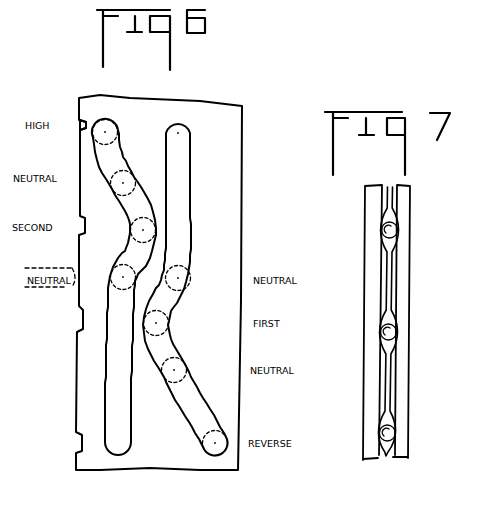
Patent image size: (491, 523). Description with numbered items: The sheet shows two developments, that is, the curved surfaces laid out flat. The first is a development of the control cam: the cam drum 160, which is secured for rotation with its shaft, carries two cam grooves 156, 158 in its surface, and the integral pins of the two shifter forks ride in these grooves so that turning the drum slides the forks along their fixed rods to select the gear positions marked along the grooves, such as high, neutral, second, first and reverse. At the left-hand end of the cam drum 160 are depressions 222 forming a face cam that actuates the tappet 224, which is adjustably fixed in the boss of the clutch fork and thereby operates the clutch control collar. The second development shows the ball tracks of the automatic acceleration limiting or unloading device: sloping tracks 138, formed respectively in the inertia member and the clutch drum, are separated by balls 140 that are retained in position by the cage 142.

In FIG. 6, the cam drum 160 is at (233, 182).
In FIG. 6, the cam groove 156 is at (125, 419).
In FIG. 6, the cam groove 158 is at (174, 344).
In FIG. 6, the depressions 222 is at (80, 128).
In FIG. 6, the tappet 224 is at (47, 291).
In FIG. 7, the balls 140 is at (400, 229).
In FIG. 7, the cage 142 is at (392, 286).
In FIG. 7, the sloping tracks 138 is at (394, 328).